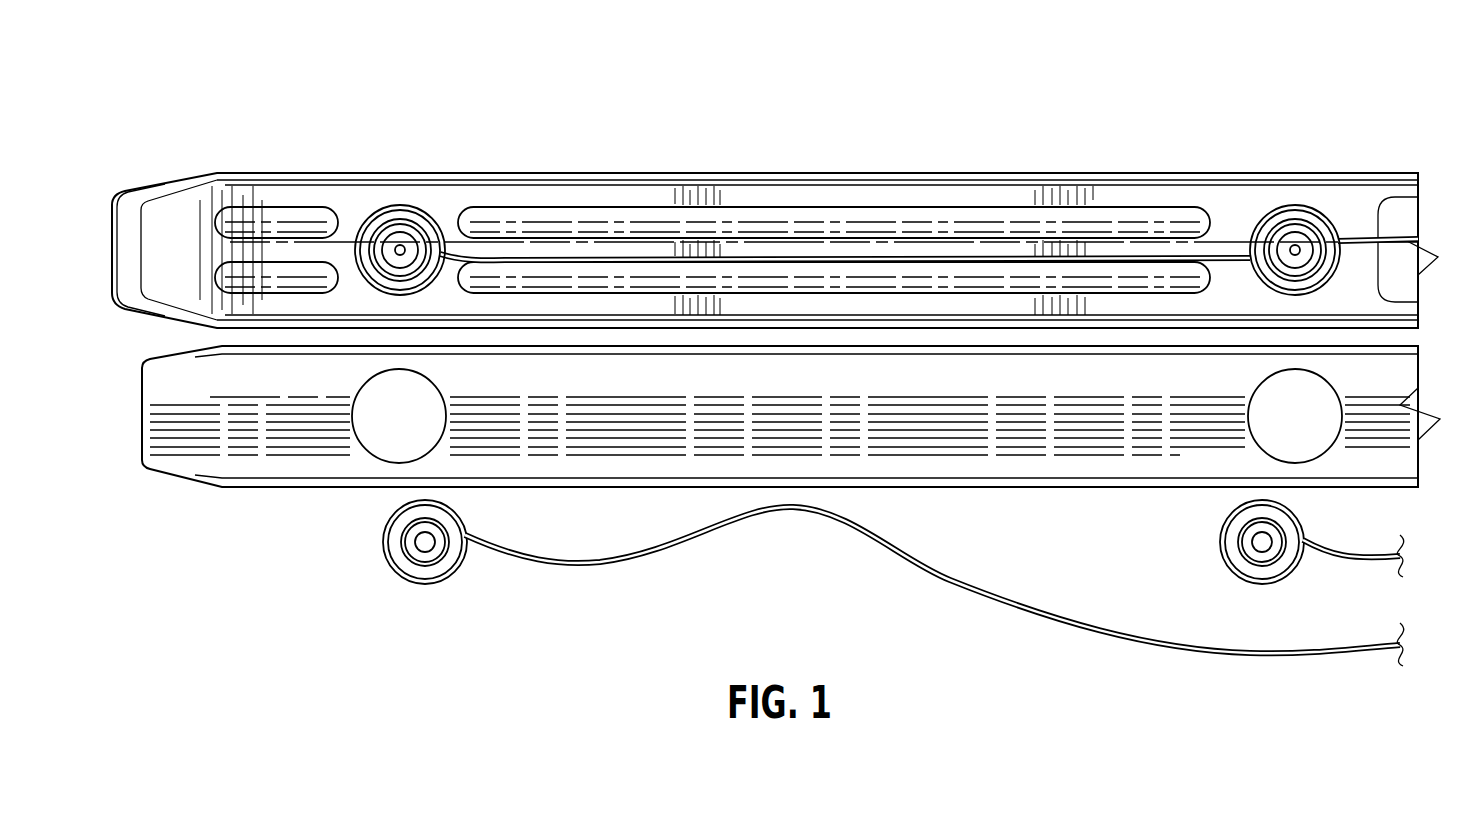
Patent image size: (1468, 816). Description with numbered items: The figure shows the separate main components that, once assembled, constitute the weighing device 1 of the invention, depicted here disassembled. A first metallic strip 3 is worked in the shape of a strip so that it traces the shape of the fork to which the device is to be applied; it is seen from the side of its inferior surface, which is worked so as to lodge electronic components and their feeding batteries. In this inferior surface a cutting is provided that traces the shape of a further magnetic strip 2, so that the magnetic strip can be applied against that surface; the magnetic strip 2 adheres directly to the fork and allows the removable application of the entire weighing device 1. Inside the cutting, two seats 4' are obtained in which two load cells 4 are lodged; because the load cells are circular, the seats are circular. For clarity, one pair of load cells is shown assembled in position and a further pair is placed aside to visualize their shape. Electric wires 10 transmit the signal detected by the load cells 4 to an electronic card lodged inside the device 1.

The weighing device 1 is at (630, 122).
The magnetic strip 2 is at (200, 435).
The metallic strip 3 is at (775, 222).
The load cells 4 is at (806, 378).
The seats 4' is at (844, 213).
The electric wires 10 is at (790, 510).